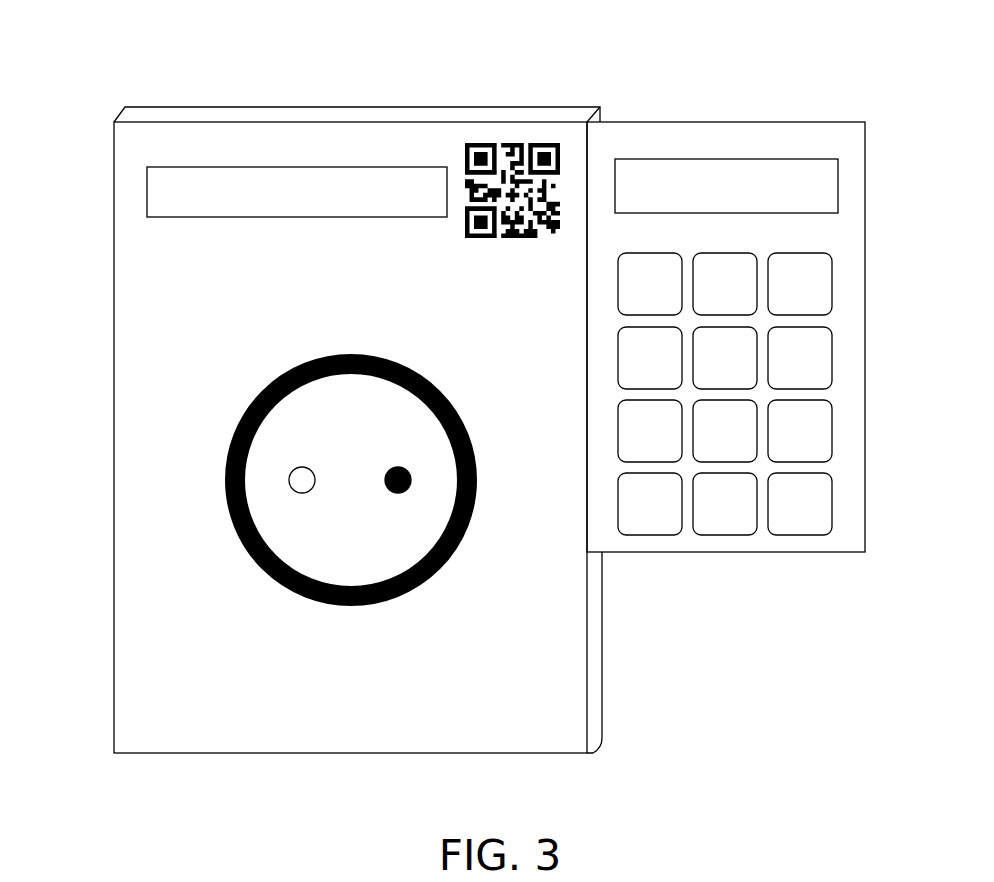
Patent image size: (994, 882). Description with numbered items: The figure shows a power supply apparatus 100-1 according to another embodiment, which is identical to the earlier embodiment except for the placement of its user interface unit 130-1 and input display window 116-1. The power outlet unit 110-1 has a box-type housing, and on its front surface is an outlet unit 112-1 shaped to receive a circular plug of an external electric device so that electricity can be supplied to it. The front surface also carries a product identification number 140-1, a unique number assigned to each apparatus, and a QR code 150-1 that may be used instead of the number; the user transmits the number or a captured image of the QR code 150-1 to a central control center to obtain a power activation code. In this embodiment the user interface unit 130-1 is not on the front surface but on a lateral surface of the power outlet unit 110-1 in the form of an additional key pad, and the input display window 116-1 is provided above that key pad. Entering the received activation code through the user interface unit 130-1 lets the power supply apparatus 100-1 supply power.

The power supply apparatus 100-1 is at (478, 28).
The power outlet unit 110-1 is at (393, 145).
The outlet unit 112-1 is at (265, 480).
The input display window 116-1 is at (728, 175).
The user interface unit 130-1 is at (818, 354).
The product identification number 140-1 is at (147, 188).
The QR code 150-1 is at (505, 140).